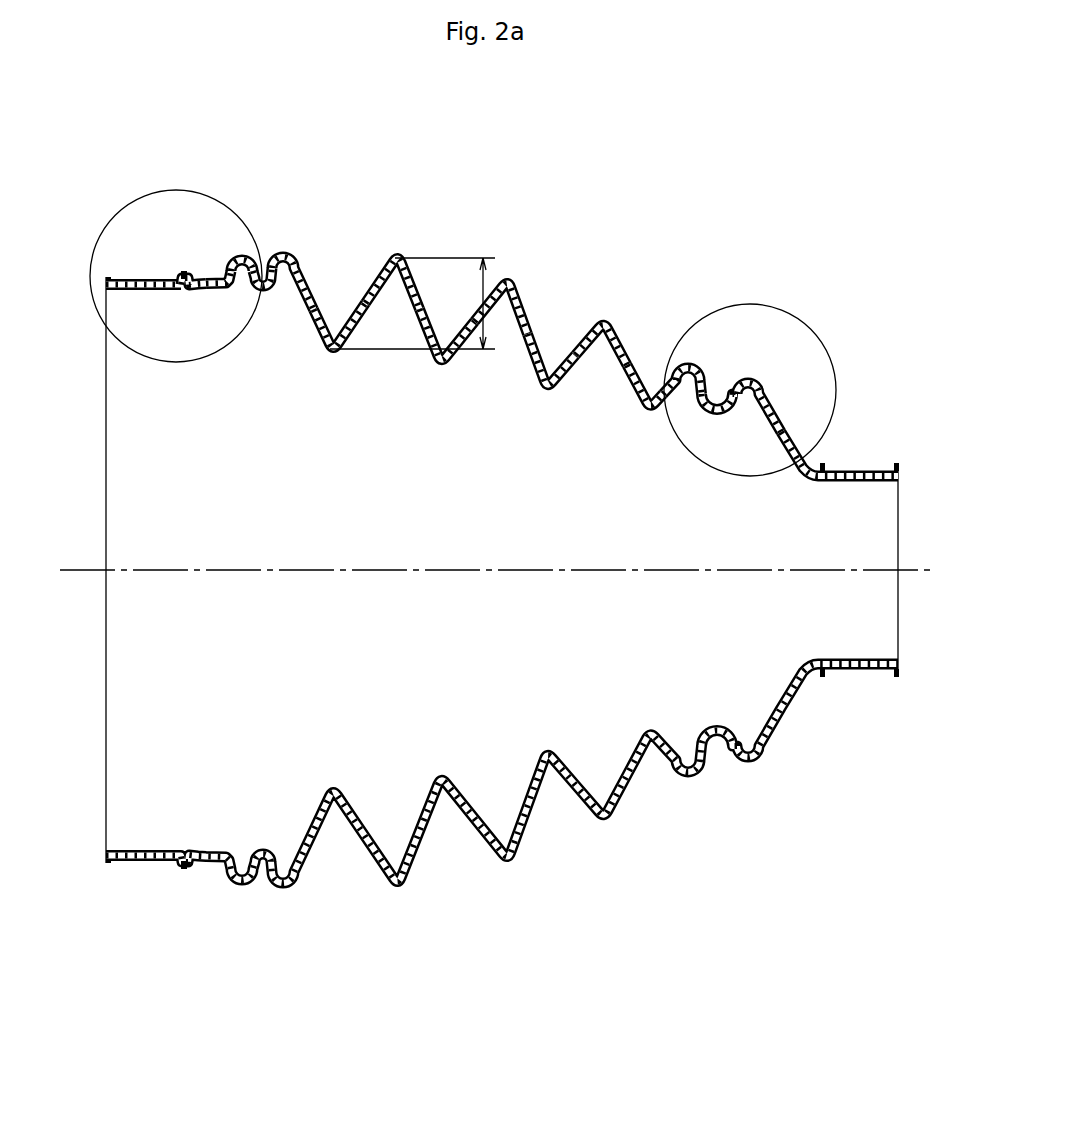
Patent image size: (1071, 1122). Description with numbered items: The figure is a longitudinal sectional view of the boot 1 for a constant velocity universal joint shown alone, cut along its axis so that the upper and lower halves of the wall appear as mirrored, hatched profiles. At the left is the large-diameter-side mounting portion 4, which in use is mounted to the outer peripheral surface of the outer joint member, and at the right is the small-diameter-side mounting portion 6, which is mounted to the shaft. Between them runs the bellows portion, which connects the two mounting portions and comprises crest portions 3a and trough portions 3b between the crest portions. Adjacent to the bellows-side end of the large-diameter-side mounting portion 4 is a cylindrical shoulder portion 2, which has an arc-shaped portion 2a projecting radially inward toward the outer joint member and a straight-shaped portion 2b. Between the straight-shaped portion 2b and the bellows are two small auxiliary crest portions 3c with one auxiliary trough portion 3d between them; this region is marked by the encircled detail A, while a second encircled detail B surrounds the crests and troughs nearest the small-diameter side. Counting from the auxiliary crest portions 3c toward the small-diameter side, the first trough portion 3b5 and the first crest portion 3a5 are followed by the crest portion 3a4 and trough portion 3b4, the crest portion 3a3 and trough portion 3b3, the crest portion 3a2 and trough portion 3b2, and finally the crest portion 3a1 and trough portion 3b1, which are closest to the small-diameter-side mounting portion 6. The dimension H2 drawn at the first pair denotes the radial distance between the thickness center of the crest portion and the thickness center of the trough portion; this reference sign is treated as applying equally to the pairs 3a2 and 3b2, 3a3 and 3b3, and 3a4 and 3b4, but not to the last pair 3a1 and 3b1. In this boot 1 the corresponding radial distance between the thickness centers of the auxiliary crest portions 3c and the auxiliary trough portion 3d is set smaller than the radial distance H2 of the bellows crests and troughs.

The boot for a constant velocity universal joint 1 is at (512, 198).
The cylindrical shoulder portion 2 is at (198, 215).
The arc-shaped portion 2a is at (193, 275).
The straight-shaped portion 2b is at (222, 281).
The crest portion 3a is at (411, 249).
The first crest portion 3a5 is at (398, 253).
The crest portion 3a4 is at (507, 278).
The crest portion 3a3 is at (604, 319).
The crest portion 3a2 is at (689, 362).
The crest portion 3a1 is at (749, 378).
The trough portion 3b is at (324, 361).
The first trough portion 3b5 is at (330, 354).
The trough portion 3b4 is at (440, 366).
The trough portion 3b3 is at (546, 392).
The trough portion 3b2 is at (650, 412).
The trough portion 3b1 is at (718, 418).
The auxiliary crest portion 3c is at (238, 262).
The auxiliary trough portion 3d is at (266, 291).
The large-diameter-side mounting portion 4 is at (135, 279).
The small-diameter-side mounting portion 6 is at (868, 468).
The detail region A is at (90, 282).
The detail region B is at (813, 327).
The radial distance H2 is at (482, 288).